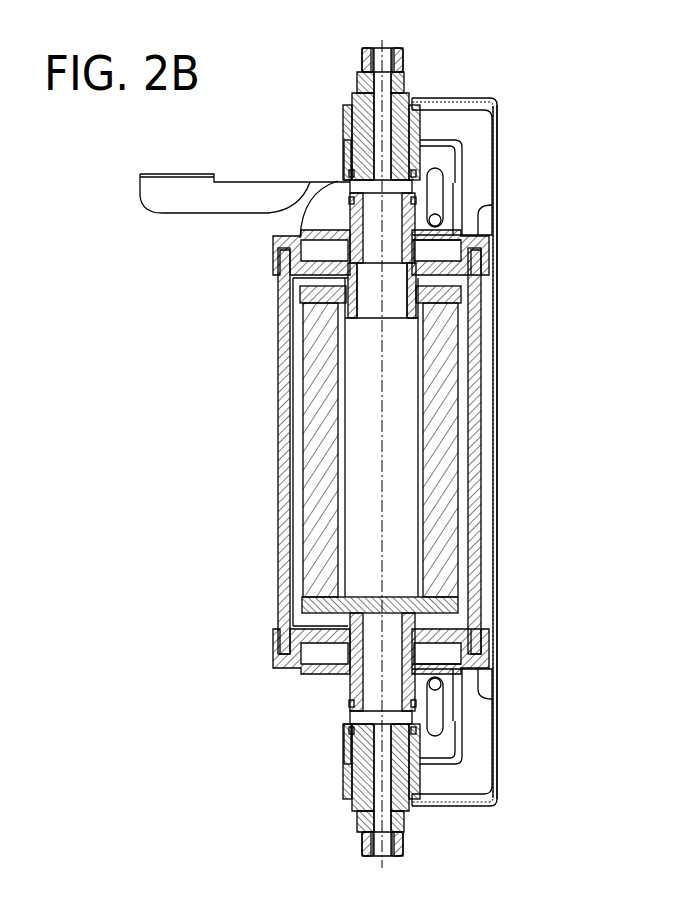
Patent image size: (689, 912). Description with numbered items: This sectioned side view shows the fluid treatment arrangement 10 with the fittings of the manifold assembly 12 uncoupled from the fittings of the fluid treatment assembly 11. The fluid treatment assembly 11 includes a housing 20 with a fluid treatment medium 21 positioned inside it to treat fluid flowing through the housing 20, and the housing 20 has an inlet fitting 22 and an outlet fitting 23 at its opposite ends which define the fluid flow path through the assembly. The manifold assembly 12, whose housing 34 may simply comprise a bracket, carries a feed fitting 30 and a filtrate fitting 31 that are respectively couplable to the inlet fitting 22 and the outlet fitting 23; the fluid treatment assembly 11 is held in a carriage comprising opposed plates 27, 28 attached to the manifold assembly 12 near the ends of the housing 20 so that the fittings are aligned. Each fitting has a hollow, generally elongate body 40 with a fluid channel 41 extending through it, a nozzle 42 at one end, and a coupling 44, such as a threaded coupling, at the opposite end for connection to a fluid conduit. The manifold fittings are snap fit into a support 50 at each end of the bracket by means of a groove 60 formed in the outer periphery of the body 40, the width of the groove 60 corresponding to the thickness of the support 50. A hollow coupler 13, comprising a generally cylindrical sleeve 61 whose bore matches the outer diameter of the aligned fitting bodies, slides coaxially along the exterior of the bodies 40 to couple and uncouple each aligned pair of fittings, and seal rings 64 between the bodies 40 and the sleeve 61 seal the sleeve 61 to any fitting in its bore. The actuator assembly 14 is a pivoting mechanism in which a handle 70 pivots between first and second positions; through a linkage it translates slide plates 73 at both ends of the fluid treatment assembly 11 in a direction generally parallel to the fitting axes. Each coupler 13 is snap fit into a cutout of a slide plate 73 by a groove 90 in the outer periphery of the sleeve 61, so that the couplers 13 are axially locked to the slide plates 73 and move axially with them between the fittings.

The fluid treatment arrangement 10 is at (257, 390).
The fluid treatment assembly 11 is at (473, 348).
The manifold assembly 12 is at (496, 98).
The hollow coupler 13 is at (342, 118).
The actuator assembly 14 is at (463, 152).
The housing 20 is at (280, 556).
The fluid treatment medium 21 is at (327, 427).
The inlet fitting 22 is at (343, 657).
The outlet fitting 23 is at (455, 244).
The plate 27 is at (482, 206).
The plate 28 is at (482, 690).
The feed fitting 30 is at (352, 822).
The filtrate fitting 31 is at (404, 80).
The housing 34 is at (498, 150).
The body 40 is at (422, 140).
The fluid channel 41 is at (387, 78).
The nozzle 42 is at (408, 188).
The coupling 44 is at (360, 60).
The support 50 is at (478, 97).
The groove 60 is at (352, 100).
The sleeve 61 is at (342, 752).
The seal ring 64 is at (345, 178).
The handle 70 is at (186, 186).
The slide plate 73 is at (488, 114).
The groove 90 is at (343, 148).